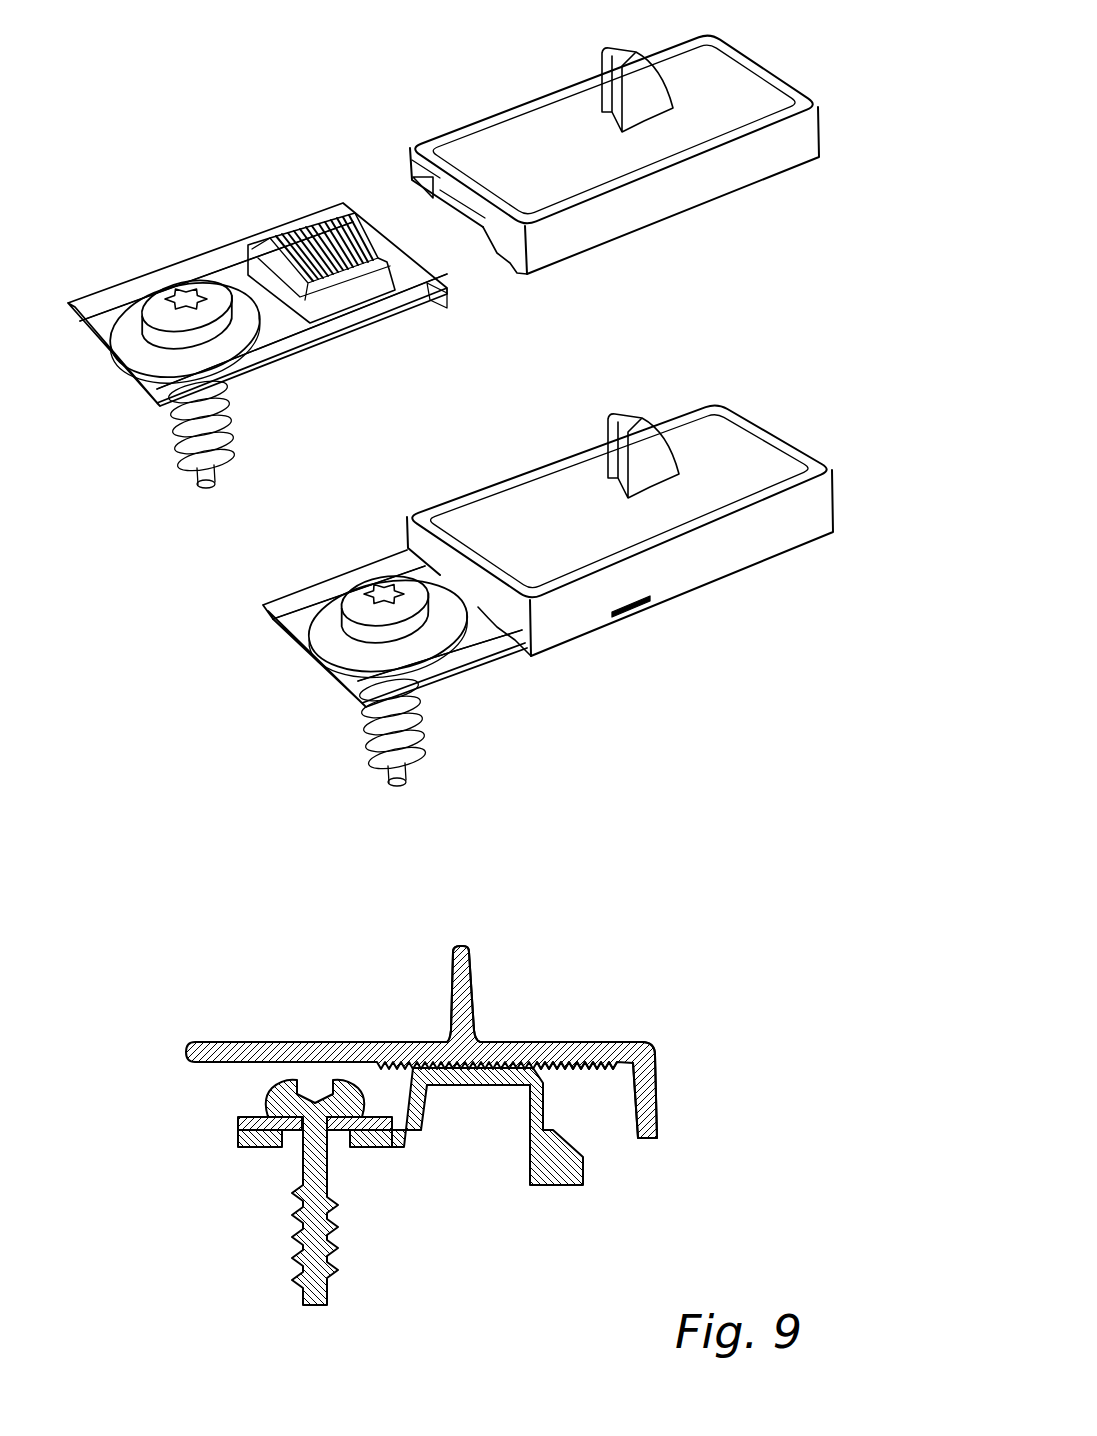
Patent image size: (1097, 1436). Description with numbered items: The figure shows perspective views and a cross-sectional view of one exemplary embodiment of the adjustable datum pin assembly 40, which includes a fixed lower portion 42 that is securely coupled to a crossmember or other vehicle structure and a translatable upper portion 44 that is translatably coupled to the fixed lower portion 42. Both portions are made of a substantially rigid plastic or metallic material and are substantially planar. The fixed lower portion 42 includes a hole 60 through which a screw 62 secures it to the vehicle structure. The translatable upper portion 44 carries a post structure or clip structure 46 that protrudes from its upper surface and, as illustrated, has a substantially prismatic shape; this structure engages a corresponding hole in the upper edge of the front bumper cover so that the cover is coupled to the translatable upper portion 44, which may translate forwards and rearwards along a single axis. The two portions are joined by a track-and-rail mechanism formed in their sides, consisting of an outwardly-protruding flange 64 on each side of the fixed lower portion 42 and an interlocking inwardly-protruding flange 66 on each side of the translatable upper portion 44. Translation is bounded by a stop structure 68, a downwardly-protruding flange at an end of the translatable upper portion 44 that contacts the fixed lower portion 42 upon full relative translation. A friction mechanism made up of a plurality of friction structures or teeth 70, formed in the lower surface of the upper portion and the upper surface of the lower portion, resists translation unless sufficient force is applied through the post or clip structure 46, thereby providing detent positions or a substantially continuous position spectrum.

The adjustable datum pin assembly 40 is at (481, 52).
The fixed lower portion 42 is at (300, 352).
The translatable upper portion 44 is at (745, 50).
The post structure or clip structure 46 is at (625, 58).
The hole 60 is at (291, 1153).
The screw 62 is at (205, 488).
The outwardly-protruding flange 64 is at (140, 278).
The inwardly-protruding flange 66 is at (516, 275).
The stop structure 68 is at (653, 1102).
The friction structures or teeth 70 is at (565, 1086).